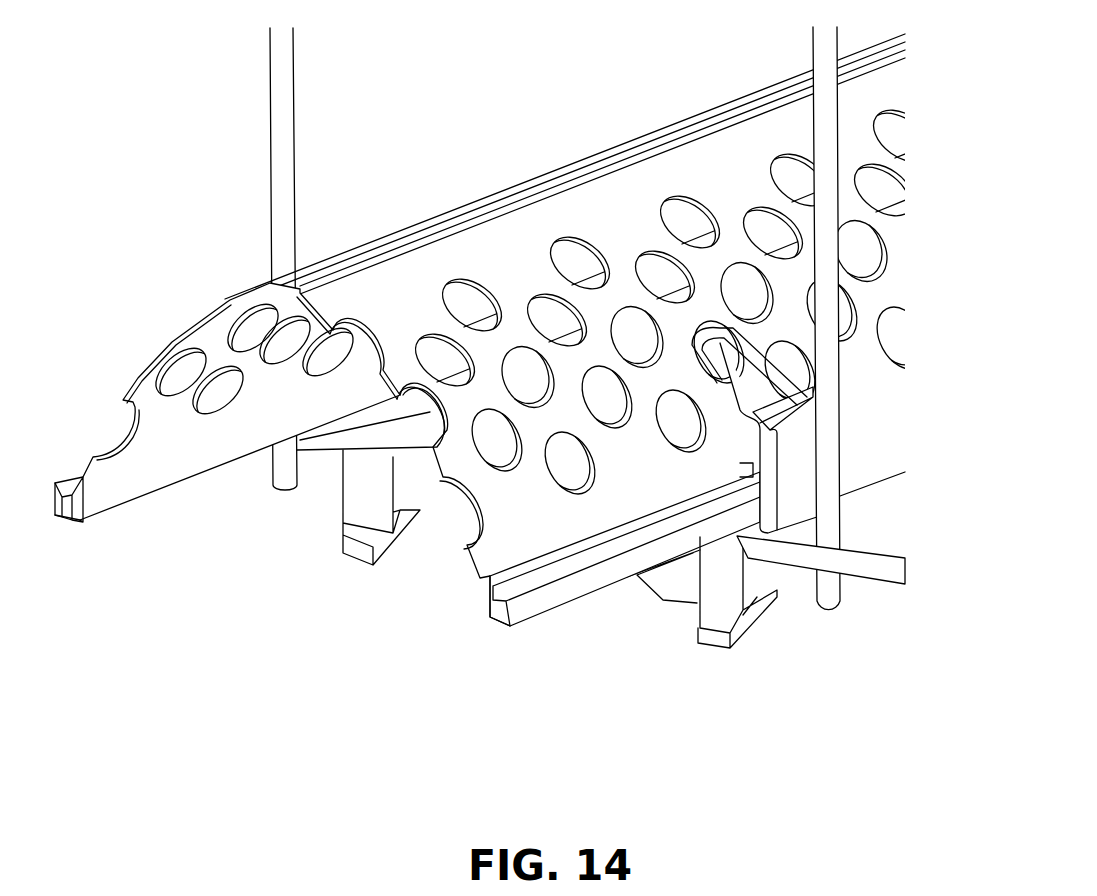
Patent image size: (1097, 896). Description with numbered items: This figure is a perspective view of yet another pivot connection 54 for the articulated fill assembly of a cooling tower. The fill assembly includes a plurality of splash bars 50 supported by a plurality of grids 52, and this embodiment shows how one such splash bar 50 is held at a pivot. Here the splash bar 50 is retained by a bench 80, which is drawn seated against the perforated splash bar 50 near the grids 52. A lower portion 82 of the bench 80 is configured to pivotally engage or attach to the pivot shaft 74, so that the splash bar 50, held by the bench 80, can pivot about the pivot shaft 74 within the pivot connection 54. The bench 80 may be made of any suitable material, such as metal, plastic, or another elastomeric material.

The splash bar 50 is at (120, 518).
The grid 52 is at (284, 77).
The pivot connection 54 is at (843, 660).
The pivot shaft 74 is at (867, 553).
The bench 80 is at (790, 608).
The lower portion of the bench 82 is at (713, 647).